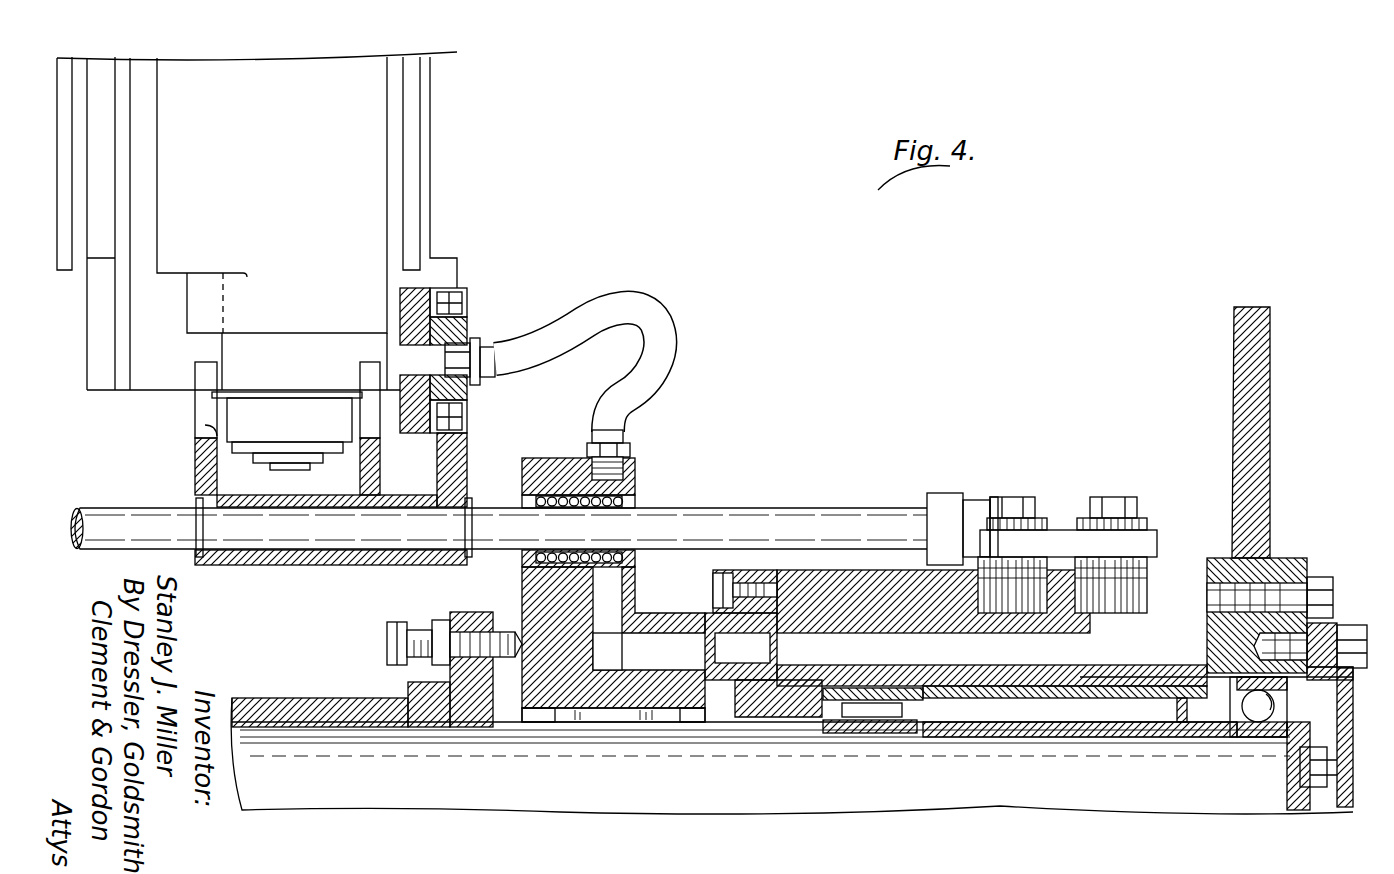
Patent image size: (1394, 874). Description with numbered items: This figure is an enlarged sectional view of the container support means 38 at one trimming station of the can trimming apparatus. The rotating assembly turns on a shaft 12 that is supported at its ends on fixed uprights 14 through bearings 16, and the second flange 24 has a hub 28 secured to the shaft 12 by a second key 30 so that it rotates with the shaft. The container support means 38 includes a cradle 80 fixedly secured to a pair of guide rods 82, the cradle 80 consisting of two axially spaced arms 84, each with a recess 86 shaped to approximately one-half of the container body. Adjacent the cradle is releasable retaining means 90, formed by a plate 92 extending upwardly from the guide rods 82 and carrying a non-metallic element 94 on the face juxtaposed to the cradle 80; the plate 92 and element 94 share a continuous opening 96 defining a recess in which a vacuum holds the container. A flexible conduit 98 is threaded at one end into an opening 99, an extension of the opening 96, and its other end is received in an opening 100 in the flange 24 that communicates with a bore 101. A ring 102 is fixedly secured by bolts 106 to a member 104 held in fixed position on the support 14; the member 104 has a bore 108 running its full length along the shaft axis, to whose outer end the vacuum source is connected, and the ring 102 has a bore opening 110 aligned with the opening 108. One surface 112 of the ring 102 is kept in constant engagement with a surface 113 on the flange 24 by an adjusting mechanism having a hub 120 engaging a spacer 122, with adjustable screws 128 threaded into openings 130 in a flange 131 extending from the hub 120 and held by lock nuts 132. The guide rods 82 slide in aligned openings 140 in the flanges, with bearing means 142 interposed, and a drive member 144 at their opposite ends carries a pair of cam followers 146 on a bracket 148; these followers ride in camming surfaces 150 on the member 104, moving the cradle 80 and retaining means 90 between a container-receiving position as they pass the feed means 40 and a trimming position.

The shaft 12 is at (388, 789).
The fixed upright 14 is at (1236, 338).
The bearing 16 is at (1253, 718).
The second flange 24 is at (569, 491).
The hub 28 is at (588, 667).
The second key 30 is at (573, 722).
The container support means 38 is at (762, 250).
The means for feeding containers 40 is at (488, 100).
The cradle 80 is at (300, 564).
The guide rod 82 is at (110, 509).
The arm 84 is at (195, 468).
The recess 86 is at (205, 428).
The releasable retaining means 90 is at (426, 327).
The plate 92 is at (466, 433).
The non-metallic element 94 is at (402, 306).
The opening 96 is at (412, 372).
The flexible conduit 98 is at (597, 316).
The opening 99 is at (468, 344).
The opening 100 is at (598, 453).
The bore 101 is at (612, 608).
The ring 102 is at (710, 565).
The member 104 is at (845, 586).
The bolt 106 is at (713, 600).
The bore 108 is at (866, 668).
The bore opening 110 is at (773, 666).
The surface 112 is at (703, 674).
The surface 113 is at (708, 690).
The hub 120 is at (410, 690).
The spacer 122 is at (281, 706).
The adjustable screw 128 is at (392, 640).
The opening 130 is at (413, 645).
The flange 131 is at (482, 612).
The lock nut 132 is at (463, 632).
The opening 140 is at (530, 500).
The bearing means 142 is at (603, 508).
The drive member 144 is at (1067, 540).
The cam follower 146 is at (1032, 577).
The bracket 148 is at (1053, 528).
The camming surface 150 is at (1010, 600).